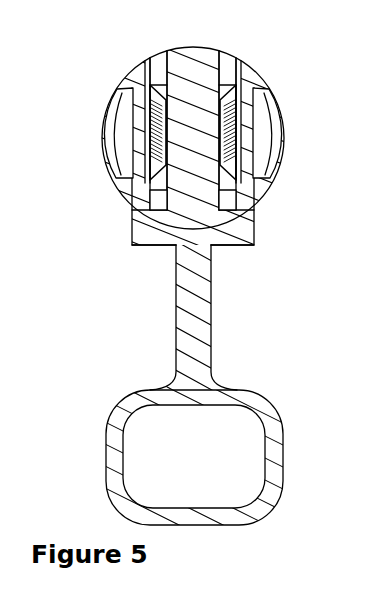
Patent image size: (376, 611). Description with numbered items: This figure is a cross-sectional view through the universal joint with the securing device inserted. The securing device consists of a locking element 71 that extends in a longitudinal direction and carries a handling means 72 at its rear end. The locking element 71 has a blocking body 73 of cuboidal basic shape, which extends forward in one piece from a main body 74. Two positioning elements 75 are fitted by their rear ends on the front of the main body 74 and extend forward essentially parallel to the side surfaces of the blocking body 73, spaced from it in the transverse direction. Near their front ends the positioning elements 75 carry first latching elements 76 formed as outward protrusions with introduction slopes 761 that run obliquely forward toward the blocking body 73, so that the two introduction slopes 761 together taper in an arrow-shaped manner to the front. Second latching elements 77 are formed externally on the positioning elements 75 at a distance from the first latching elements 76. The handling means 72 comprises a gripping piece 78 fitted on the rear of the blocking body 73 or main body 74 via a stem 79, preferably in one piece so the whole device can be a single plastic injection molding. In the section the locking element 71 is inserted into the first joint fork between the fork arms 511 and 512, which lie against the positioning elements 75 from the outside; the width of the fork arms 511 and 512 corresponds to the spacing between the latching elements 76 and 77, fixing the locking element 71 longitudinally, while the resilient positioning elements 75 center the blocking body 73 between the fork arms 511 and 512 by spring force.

The locking element 71 is at (118, 222).
The handling means 72 is at (166, 404).
The blocking body 73 is at (190, 67).
The main body 74 is at (256, 238).
The positioning elements 75 is at (130, 113).
The first latching elements 76 is at (131, 75).
The second latching elements 77 is at (132, 189).
The gripping piece 78 is at (256, 403).
The stem 79 is at (197, 323).
The fork arm 511 is at (113, 145).
The fork arm 512 is at (272, 121).
The introduction slopes 761 is at (149, 86).